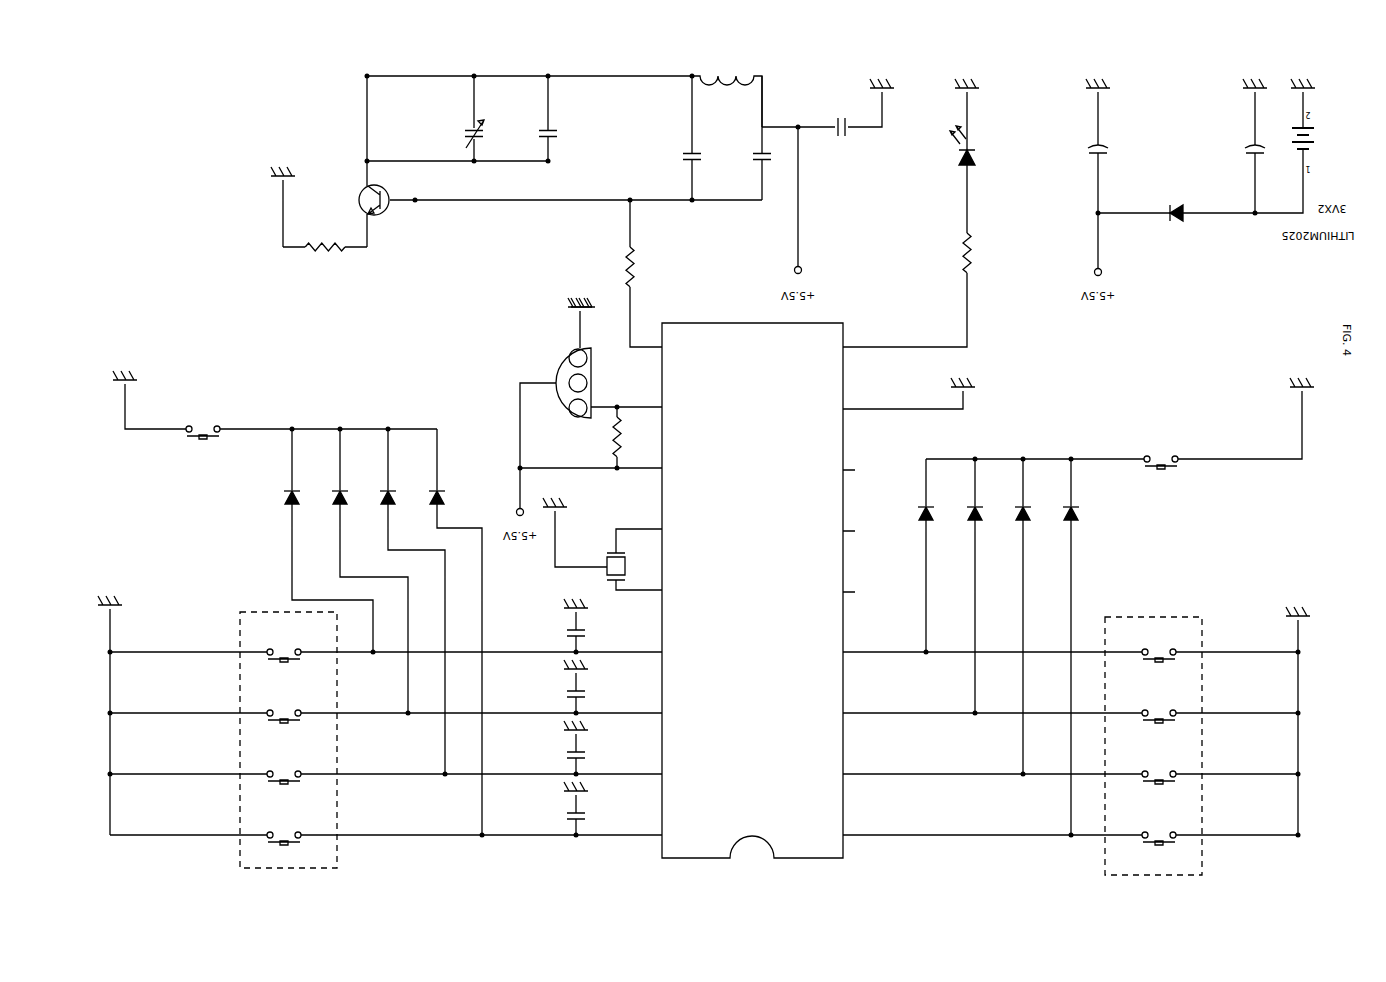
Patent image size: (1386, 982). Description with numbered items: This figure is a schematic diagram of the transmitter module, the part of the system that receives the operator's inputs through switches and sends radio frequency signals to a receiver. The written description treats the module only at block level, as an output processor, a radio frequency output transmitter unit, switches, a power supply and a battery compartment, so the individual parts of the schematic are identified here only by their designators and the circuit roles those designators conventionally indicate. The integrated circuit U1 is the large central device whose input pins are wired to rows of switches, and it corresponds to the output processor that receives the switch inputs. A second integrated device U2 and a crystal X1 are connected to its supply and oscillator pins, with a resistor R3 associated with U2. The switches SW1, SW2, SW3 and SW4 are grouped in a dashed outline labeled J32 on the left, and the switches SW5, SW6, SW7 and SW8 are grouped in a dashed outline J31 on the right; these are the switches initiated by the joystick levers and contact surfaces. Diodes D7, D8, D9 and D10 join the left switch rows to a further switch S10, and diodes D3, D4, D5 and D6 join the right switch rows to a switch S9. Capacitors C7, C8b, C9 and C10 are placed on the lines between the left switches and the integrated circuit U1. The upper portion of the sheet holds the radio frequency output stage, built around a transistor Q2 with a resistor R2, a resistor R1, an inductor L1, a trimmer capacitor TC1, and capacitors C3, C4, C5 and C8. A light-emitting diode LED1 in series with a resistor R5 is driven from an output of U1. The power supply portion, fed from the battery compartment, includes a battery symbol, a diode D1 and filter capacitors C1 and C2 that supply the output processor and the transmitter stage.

The microcontroller HT48R05A U1 is at (751, 606).
The voltage regulator XT7033 U2 is at (602, 383).
The transistor C1874C Q2 is at (404, 216).
The resistor 33K R1 is at (614, 268).
The resistor 47 R2 is at (325, 260).
The resistor 10K R3 is at (601, 440).
The resistor 470 R5 is at (983, 260).
The capacitor 47uF/16V C1 is at (1068, 161).
The capacitor 47uF/16V C2 is at (1225, 161).
The capacitor C3 is at (755, 138).
The capacitor 5pF C4 is at (560, 118).
The capacitor C5 is at (685, 138).
The capacitor 103pF C7 is at (598, 825).
The capacitor 102pF C8 is at (835, 138).
The capacitor 103pF C8b is at (598, 764).
The capacitor 103pF C9 is at (598, 703).
The capacitor 103pF C10 is at (598, 642).
The trimmer capacitor 2.3p TC1 is at (490, 118).
The inductor 1.5uH L1 is at (727, 95).
The diode 1N4148 D1 is at (1169, 217).
The diode 1N4148 D3 is at (933, 480).
The diode 1N4148 D4 is at (1078, 480).
The diode 1N4148 D5 is at (982, 480).
The diode 1N4148 D6 is at (1030, 480).
The diode 1N4148 D7 is at (444, 459).
The diode 1N4148 D8 is at (395, 459).
The diode 1N4148 D9 is at (347, 459).
The diode 1N4148 D10 is at (299, 457).
The blue LED LED1 is at (947, 151).
The crystal 4MHz X1 is at (586, 574).
The switch SW1 is at (283, 852).
The switch SW2 is at (283, 792).
The switch SW3 is at (283, 731).
The switch SW4 is at (283, 670).
The switch SW5 is at (1158, 671).
The switch SW6 is at (1158, 793).
The switch SW7 is at (1158, 854).
The switch SW8 is at (1158, 732).
The switch YST1102G S9 is at (1155, 468).
The switch YST1102G S10 is at (195, 438).
The connector J31 is at (1156, 760).
The connector J32 is at (275, 754).